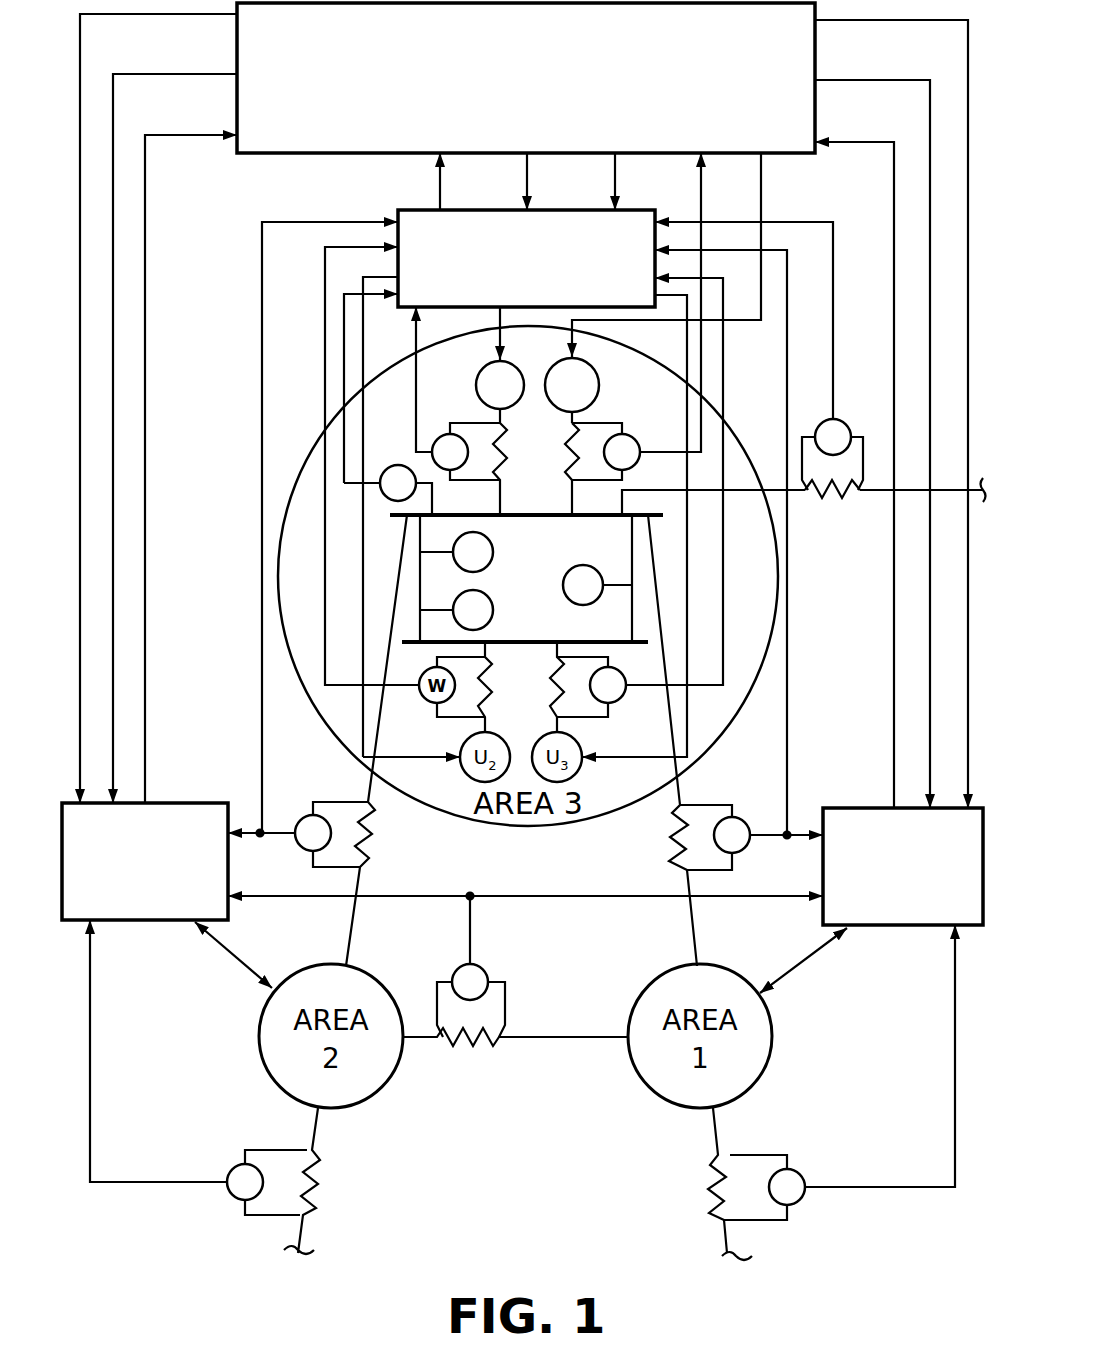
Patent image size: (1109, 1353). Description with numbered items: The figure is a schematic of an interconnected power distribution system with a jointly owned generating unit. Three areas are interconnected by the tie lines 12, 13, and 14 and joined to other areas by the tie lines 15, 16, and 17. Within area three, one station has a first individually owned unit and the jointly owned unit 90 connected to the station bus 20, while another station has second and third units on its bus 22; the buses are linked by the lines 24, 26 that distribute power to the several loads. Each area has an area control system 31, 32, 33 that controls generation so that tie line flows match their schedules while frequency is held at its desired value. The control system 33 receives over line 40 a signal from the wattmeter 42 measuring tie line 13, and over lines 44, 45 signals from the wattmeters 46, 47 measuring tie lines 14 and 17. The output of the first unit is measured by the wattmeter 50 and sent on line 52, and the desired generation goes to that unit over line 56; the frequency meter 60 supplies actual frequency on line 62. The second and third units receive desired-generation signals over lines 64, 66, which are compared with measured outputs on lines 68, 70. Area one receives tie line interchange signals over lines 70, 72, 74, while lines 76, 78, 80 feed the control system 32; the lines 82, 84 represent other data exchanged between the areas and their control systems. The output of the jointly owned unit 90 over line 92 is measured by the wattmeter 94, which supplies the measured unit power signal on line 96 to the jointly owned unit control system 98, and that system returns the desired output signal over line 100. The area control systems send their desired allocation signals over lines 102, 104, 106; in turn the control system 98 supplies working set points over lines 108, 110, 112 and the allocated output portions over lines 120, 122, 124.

The tie line 12 is at (588, 1038).
The tie line 13 is at (347, 920).
The tie line 14 is at (695, 922).
The tie line 15 is at (710, 1133).
The tie line 16 is at (320, 1125).
The tie line 17 is at (877, 491).
The station bus 20 is at (522, 517).
The station bus 22 is at (512, 640).
The line 24 is at (632, 606).
The line 26 is at (420, 620).
The area control system 31 is at (900, 927).
The area control system 32 is at (128, 922).
The area control system 33 is at (643, 210).
The line 40 is at (262, 257).
The wattmeter 42 is at (303, 817).
The line 44 is at (787, 344).
The line 45 is at (834, 263).
The wattmeter 46 is at (744, 817).
The wattmeter 47 is at (845, 425).
The wattmeter 50 is at (447, 434).
The line 52 is at (416, 333).
The line 56 is at (497, 330).
The frequency meter 60 is at (393, 465).
The line 62 is at (344, 372).
The line 64 is at (410, 757).
The line 66 is at (641, 756).
The line 68 is at (330, 277).
The line 70 is at (723, 528).
The line 72 is at (592, 898).
The line 74 is at (797, 840).
The line 76 is at (91, 1036).
The line 78 is at (270, 898).
The line 80 is at (283, 840).
The line 82 is at (801, 965).
The line 84 is at (235, 969).
The jointly owned unit 90 is at (598, 373).
The line 92 is at (564, 430).
The wattmeter 94 is at (637, 437).
The line 96 is at (700, 372).
The jointly owned unit control system 98 is at (309, 156).
The line 100 is at (757, 178).
The line 102 is at (857, 142).
The line 104 is at (181, 135).
The line 106 is at (437, 176).
The line 108 is at (868, 20).
The line 110 is at (136, 14).
The line 112 is at (614, 178).
The line 120 is at (852, 80).
The line 122 is at (150, 74).
The line 124 is at (524, 178).